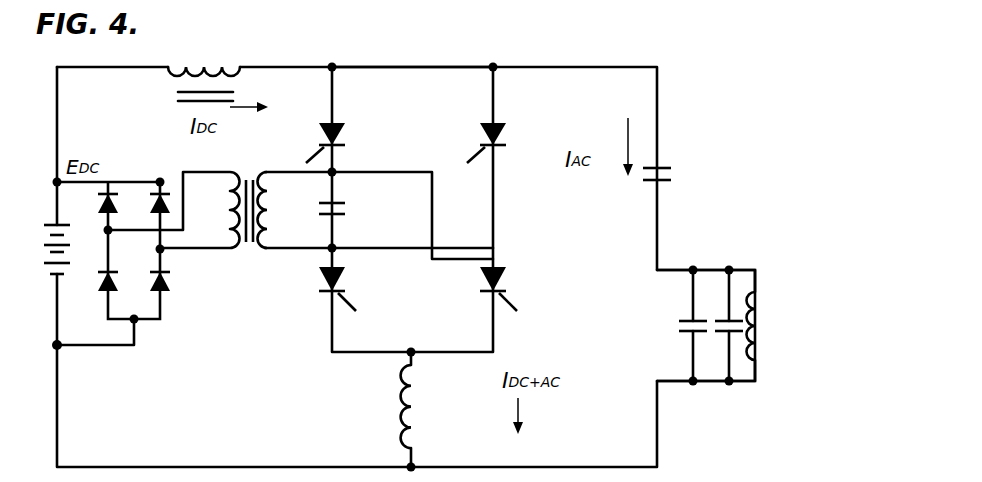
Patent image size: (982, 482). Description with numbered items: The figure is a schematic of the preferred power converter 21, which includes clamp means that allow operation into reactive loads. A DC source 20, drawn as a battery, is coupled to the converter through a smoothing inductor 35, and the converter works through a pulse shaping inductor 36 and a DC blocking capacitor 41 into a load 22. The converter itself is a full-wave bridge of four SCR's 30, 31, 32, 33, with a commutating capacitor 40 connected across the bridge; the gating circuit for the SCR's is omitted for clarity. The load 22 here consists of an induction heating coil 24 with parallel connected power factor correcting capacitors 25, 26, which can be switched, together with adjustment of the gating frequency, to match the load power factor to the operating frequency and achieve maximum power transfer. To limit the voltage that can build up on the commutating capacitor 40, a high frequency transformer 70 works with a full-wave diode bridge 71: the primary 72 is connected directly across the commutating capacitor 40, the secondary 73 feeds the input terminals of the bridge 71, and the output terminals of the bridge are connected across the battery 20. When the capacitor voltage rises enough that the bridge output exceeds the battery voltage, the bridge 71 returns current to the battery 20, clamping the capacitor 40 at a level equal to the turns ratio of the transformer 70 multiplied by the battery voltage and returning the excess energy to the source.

The DC source 20 is at (36, 228).
The power converter 21 is at (403, 60).
The load 22 is at (709, 332).
The induction heating coil 24 is at (755, 300).
The power factor correcting capacitor 25 is at (676, 328).
The power factor correcting capacitor 26 is at (714, 334).
The SCR 30 is at (341, 123).
The SCR 31 is at (347, 283).
The SCR 32 is at (503, 118).
The SCR 33 is at (506, 268).
The smoothing inductor 35 is at (200, 64).
The pulse shaping inductor 36 is at (388, 399).
The commutating capacitor 40 is at (348, 210).
The DC blocking capacitor 41 is at (671, 177).
The high frequency transformer 70 is at (197, 211).
The full-wave diode bridge 71 is at (135, 266).
The primary 72 is at (264, 250).
The secondary 73 is at (231, 250).